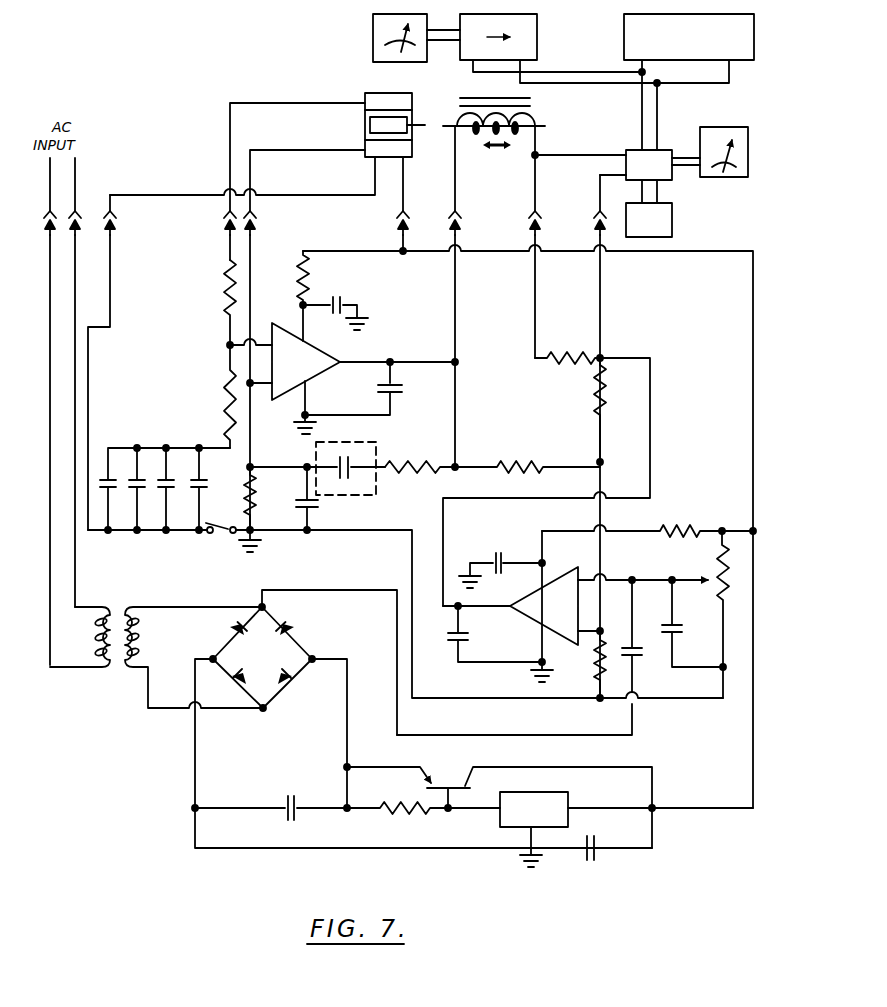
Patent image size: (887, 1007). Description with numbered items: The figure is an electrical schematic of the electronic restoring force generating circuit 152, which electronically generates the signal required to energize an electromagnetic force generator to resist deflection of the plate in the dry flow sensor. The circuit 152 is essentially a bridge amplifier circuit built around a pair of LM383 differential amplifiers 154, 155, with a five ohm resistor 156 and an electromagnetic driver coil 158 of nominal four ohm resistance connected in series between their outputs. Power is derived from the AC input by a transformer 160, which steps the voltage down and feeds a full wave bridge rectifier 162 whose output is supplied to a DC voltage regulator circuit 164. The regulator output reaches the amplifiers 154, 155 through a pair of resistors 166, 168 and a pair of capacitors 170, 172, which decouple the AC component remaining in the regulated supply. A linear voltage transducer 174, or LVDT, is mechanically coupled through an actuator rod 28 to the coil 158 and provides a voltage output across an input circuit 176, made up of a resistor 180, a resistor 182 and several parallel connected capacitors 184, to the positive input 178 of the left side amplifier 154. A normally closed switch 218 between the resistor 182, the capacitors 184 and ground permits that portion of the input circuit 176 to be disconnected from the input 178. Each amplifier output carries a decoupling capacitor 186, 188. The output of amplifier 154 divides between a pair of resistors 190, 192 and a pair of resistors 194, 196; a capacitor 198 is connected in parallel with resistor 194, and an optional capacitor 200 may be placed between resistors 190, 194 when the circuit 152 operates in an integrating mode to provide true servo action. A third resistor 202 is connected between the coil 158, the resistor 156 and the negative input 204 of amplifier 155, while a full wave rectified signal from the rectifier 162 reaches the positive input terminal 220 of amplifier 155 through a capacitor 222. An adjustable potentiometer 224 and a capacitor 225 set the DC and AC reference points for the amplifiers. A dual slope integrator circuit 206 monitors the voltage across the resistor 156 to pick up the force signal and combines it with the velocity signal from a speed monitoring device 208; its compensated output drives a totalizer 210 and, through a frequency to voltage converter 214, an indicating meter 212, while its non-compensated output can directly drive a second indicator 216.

The electronic restoring force generating circuit 152 is at (281, 95).
The indicating meter 212 is at (373, 33).
The frequency to voltage converter 214 is at (537, 45).
The totalizer 210 is at (744, 62).
The linear voltage transducer 174 is at (405, 93).
The electromagnetic driver coil 158 is at (535, 103).
The actuator rod 28 is at (447, 128).
The dual slope integrator circuit 206 is at (675, 178).
The second indicator 216 is at (733, 177).
The speed monitoring device 208 is at (672, 228).
The resistor 180 is at (225, 278).
The input circuit 176 is at (151, 347).
The differential amplifier 154 is at (283, 325).
The resistor 166 is at (310, 278).
The capacitor 170 is at (346, 298).
The positive input 178 is at (268, 345).
The resistor 182 is at (222, 395).
The decoupling capacitor 186 is at (405, 398).
The resistor 156 is at (565, 355).
The third resistor 202 is at (595, 388).
The resistor 190 is at (402, 462).
The resistor 192 is at (510, 462).
The resistor 194 is at (258, 498).
The optional capacitor 200 is at (348, 482).
The capacitor 198 is at (320, 505).
The capacitors 184 is at (120, 484).
The normally closed switch 218 is at (218, 536).
The resistor 168 is at (672, 525).
The capacitor 172 is at (496, 552).
The differential amplifier 155 is at (553, 575).
The positive input terminal 220 is at (588, 578).
The adjustable potentiometer 224 is at (718, 562).
The negative input 204 is at (584, 628).
The capacitor 225 is at (680, 630).
The decoupling capacitor 188 is at (440, 640).
The resistor 196 is at (595, 660).
The capacitor 222 is at (640, 662).
The transformer 160 is at (118, 670).
The full wave bridge rectifier 162 is at (272, 700).
The DC voltage regulator circuit 164 is at (474, 858).